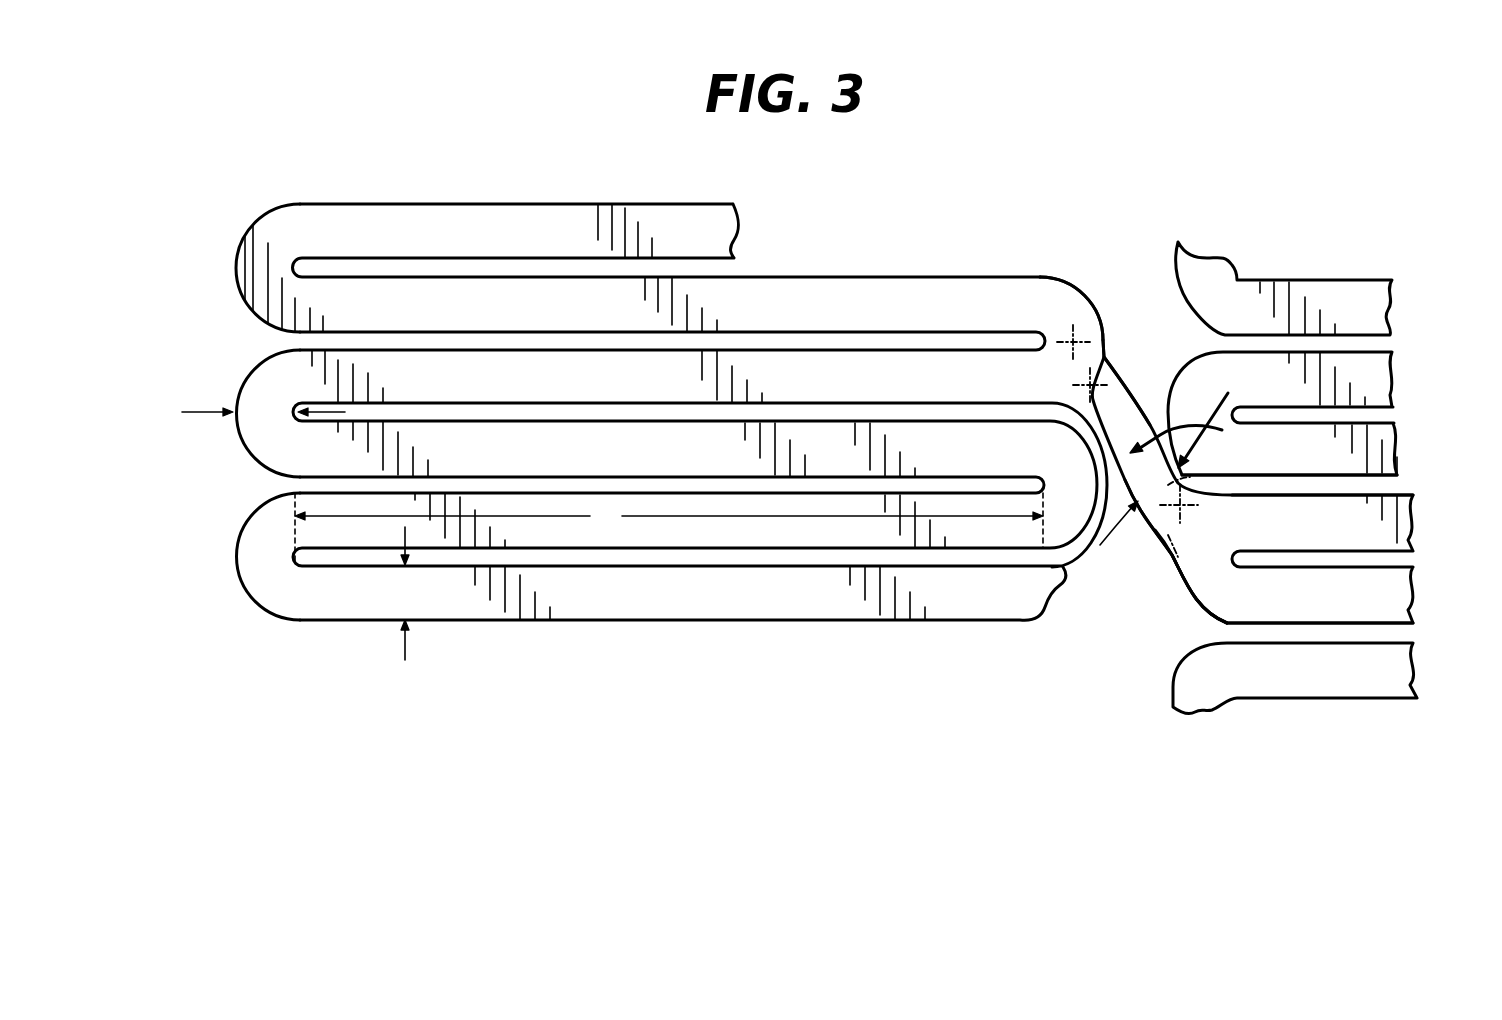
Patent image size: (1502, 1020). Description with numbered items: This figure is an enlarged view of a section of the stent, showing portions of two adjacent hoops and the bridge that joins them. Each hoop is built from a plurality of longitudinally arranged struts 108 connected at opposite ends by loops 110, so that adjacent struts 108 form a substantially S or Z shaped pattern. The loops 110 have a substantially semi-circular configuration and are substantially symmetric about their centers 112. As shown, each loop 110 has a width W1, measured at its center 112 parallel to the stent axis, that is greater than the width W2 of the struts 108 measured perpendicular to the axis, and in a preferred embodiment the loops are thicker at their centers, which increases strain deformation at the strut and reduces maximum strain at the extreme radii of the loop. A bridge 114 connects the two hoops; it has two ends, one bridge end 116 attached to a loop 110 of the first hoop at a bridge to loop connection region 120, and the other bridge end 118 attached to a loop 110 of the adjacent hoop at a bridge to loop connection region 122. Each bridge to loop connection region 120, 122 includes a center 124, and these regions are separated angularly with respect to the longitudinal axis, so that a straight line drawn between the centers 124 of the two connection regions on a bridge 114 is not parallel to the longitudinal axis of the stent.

The struts 108 is at (530, 222).
The loops 110 is at (243, 233).
The center 112 is at (1065, 335).
The bridge 114 is at (1215, 414).
The bridge end 116 is at (1118, 393).
The bridge end 118 is at (1232, 477).
The bridge to loop connection region 120 is at (1104, 357).
The bridge to loop connection region 122 is at (1173, 567).
The center 124 is at (1085, 387).